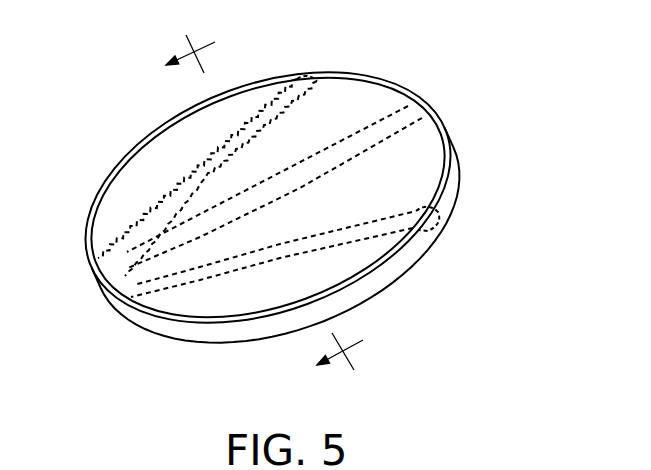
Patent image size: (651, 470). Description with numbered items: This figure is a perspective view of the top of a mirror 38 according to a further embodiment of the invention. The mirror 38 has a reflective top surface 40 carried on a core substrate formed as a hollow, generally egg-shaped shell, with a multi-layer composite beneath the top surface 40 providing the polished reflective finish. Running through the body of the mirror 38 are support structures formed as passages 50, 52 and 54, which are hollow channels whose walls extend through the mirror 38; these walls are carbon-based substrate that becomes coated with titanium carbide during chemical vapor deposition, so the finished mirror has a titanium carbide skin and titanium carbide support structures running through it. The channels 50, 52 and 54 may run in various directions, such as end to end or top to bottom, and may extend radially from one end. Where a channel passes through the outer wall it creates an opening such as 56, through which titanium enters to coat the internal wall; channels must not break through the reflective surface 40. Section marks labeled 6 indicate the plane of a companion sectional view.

The mirror 38 is at (479, 93).
The reflective top surface 40 is at (345, 92).
The passage 50 is at (327, 250).
The passage 52 is at (387, 140).
The passage 54 is at (186, 186).
The opening 56 is at (434, 220).
The section line 6- 6 is at (265, 197).